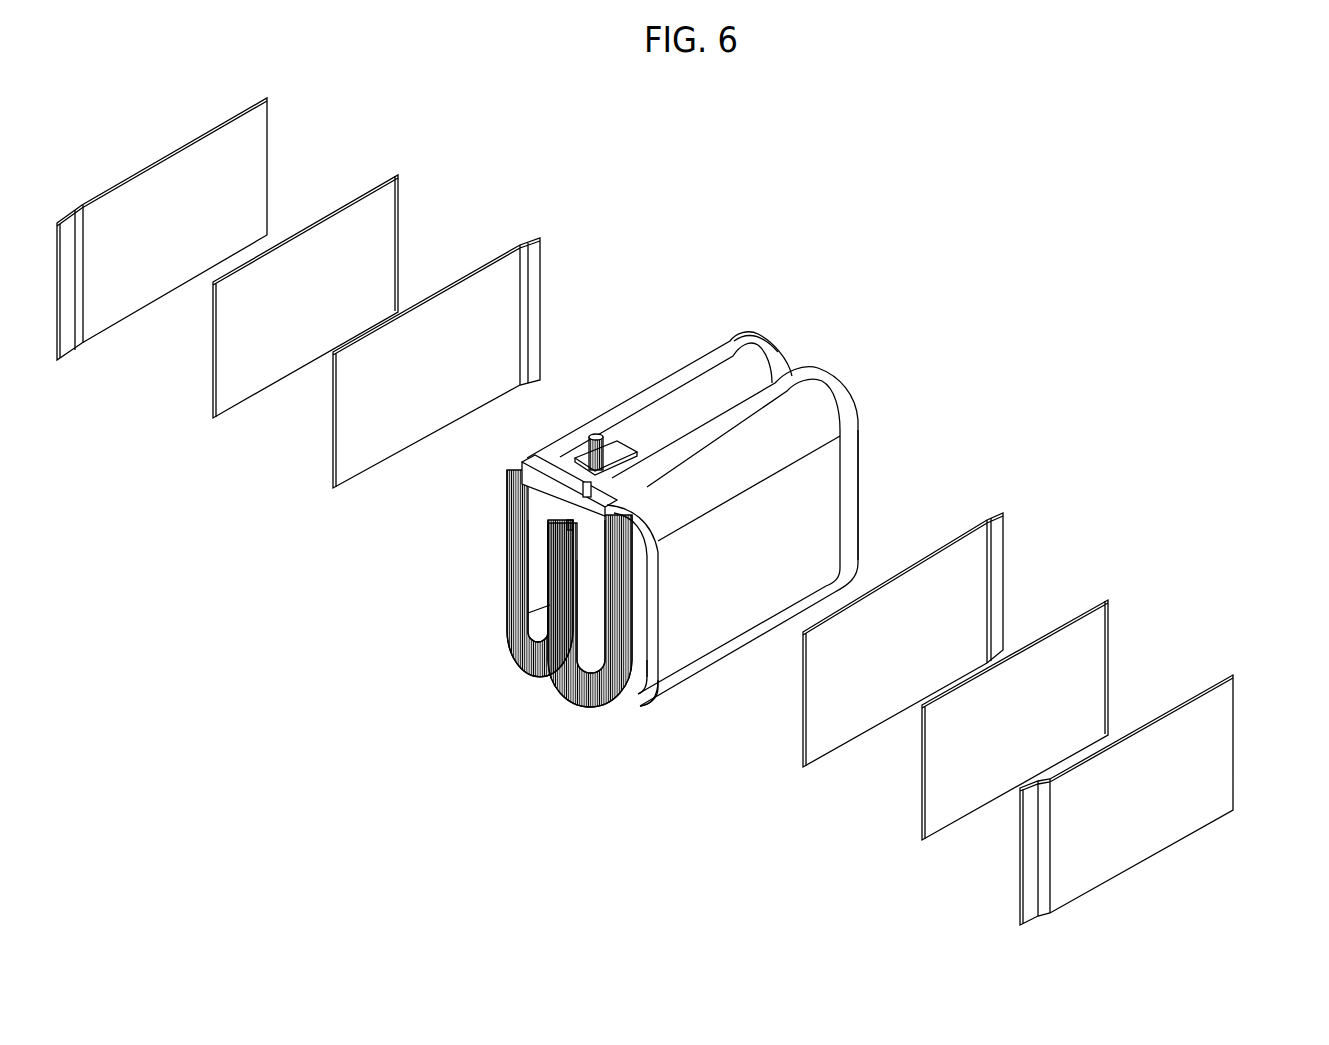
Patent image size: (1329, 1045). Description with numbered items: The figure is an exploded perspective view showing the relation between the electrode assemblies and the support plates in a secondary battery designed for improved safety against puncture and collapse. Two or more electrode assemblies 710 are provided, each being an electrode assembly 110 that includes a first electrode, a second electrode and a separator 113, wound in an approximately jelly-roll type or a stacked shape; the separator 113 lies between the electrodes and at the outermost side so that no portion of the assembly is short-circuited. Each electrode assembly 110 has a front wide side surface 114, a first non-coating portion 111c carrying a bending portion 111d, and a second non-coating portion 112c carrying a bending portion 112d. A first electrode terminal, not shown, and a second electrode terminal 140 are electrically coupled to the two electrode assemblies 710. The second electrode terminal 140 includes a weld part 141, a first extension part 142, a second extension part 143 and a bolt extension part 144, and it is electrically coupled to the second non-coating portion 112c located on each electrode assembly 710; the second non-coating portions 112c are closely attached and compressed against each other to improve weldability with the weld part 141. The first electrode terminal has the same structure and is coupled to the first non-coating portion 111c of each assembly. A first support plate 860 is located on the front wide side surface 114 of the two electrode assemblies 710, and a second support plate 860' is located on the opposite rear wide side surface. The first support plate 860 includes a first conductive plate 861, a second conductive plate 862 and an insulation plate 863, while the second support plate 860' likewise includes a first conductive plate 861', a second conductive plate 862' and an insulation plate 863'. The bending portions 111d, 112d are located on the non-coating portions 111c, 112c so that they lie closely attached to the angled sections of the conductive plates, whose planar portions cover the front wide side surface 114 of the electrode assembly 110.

The electrode assembly 110 is at (692, 519).
The first non-coating portion 111c is at (783, 365).
The bending portion 111d is at (859, 477).
The second non-coating portion 112c is at (638, 702).
The bending portion 112d is at (654, 660).
The separator 113 is at (690, 400).
The front wide side surface 114 is at (720, 618).
The second electrode terminal 140 is at (702, 347).
The weld part 141 is at (540, 568).
The first extension part 142 is at (530, 492).
The second extension part 143 is at (578, 462).
The bolt extension part 144 is at (597, 430).
The electrode assemblies 710 is at (890, 360).
The first support plate 860 is at (1018, 712).
The first conductive plate 861 is at (942, 640).
The second conductive plate 862 is at (1174, 800).
The insulation plate 863 is at (1056, 720).
The second support plate 860' is at (298, 288).
The first conductive plate 861' is at (485, 363).
The second conductive plate 862' is at (214, 229).
The insulation plate 863' is at (348, 296).